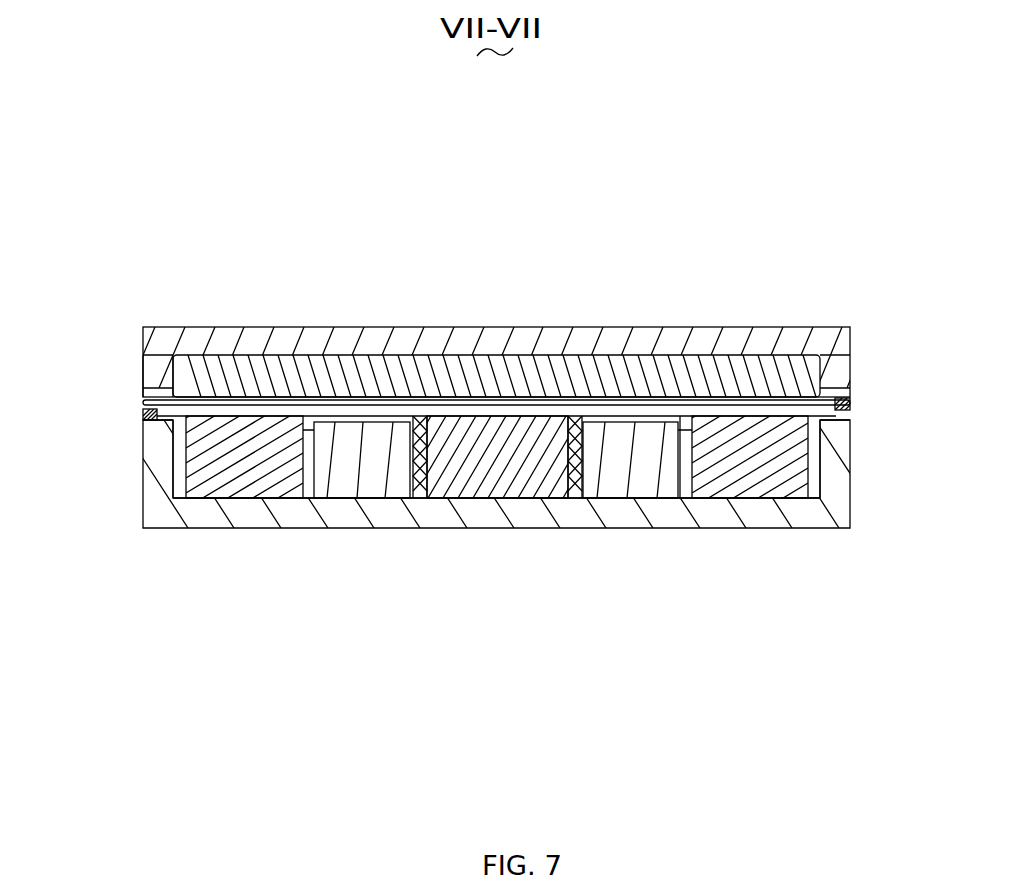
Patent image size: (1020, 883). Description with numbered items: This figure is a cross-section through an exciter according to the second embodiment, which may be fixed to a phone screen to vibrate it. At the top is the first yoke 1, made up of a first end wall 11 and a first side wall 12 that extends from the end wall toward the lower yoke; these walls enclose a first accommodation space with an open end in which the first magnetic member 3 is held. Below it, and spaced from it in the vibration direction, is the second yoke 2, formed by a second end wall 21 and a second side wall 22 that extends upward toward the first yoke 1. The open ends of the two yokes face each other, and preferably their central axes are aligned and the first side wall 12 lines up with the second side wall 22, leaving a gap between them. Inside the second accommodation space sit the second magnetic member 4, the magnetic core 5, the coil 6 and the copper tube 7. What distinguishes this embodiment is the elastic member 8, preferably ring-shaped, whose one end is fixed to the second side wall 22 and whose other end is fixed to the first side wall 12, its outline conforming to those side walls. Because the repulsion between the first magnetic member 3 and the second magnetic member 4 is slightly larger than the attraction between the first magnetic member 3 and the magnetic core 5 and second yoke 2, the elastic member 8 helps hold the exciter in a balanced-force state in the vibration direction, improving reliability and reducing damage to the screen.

The first yoke 1 is at (252, 237).
The first end wall 11 is at (250, 340).
The first side wall 12 is at (155, 377).
The second yoke 2 is at (926, 470).
The second end wall 21 is at (758, 513).
The second side wall 22 is at (830, 462).
The first magnetic member 3 is at (433, 373).
The second magnetic member 4 is at (218, 465).
The magnetic core 5 is at (500, 463).
The coil 6 is at (353, 457).
The copper tube 7 is at (420, 470).
The elastic member 8 is at (143, 417).